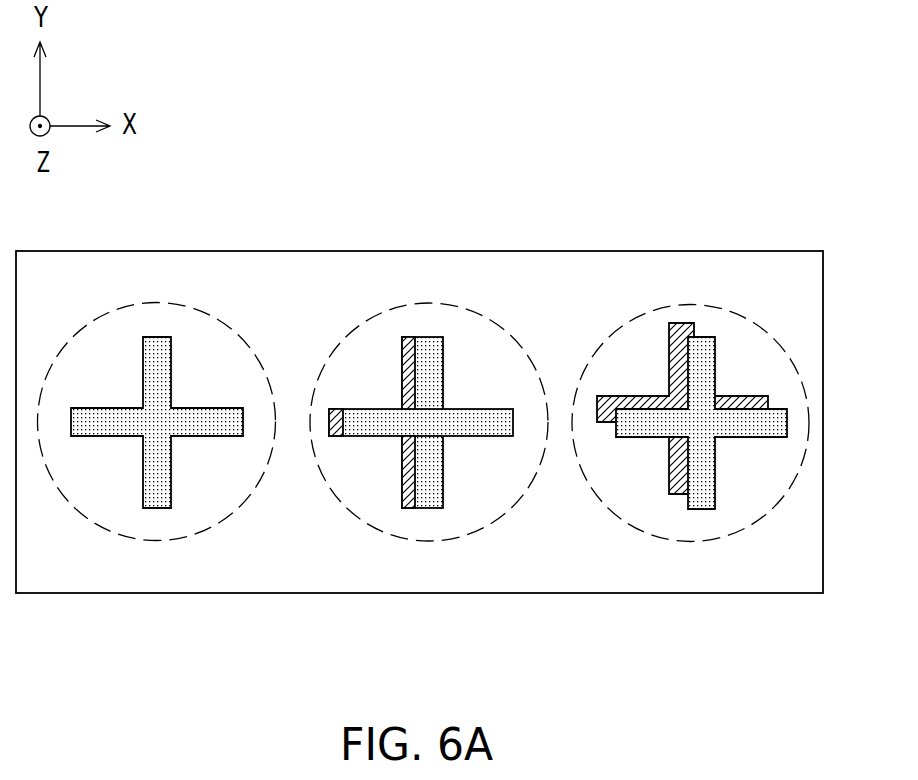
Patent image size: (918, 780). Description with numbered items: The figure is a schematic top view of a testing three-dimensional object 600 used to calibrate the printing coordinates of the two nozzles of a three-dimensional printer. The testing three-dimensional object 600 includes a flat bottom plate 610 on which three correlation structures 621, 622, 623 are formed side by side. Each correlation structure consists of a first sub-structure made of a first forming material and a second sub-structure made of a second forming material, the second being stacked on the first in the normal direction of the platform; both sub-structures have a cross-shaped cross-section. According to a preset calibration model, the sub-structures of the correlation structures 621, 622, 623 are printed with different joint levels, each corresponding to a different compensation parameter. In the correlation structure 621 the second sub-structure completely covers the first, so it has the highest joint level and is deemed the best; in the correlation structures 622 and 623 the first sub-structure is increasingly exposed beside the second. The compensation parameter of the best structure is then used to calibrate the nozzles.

The testing three-dimensional object 600 is at (792, 675).
The flat bottom plate 610 is at (527, 251).
The correlation structure 621 is at (139, 541).
The correlation structure 622 is at (418, 541).
The correlation structure 623 is at (620, 518).